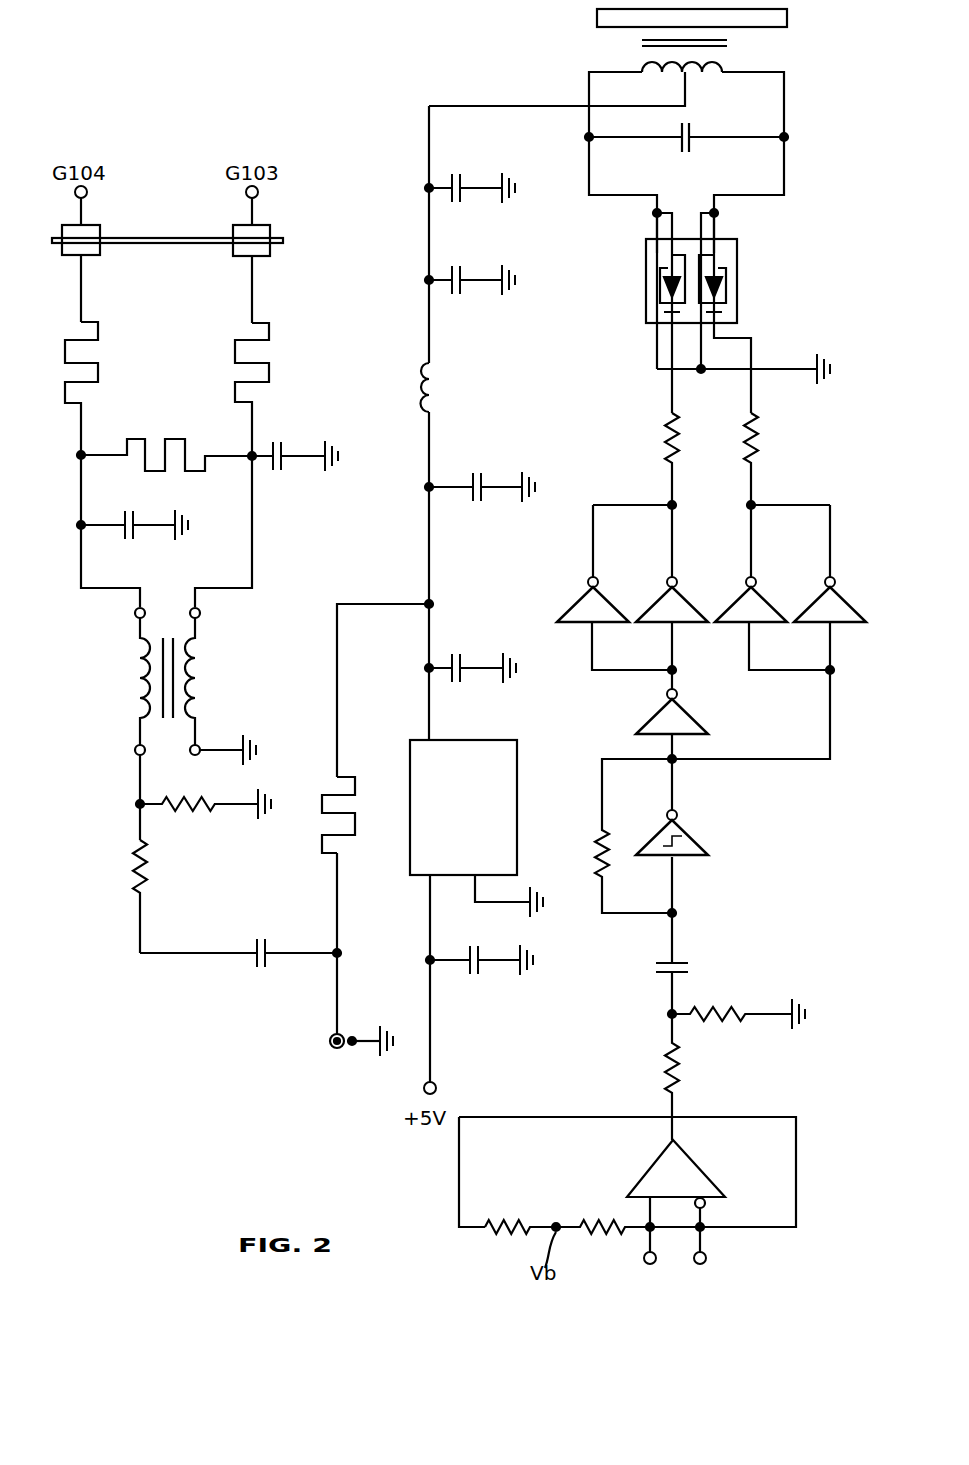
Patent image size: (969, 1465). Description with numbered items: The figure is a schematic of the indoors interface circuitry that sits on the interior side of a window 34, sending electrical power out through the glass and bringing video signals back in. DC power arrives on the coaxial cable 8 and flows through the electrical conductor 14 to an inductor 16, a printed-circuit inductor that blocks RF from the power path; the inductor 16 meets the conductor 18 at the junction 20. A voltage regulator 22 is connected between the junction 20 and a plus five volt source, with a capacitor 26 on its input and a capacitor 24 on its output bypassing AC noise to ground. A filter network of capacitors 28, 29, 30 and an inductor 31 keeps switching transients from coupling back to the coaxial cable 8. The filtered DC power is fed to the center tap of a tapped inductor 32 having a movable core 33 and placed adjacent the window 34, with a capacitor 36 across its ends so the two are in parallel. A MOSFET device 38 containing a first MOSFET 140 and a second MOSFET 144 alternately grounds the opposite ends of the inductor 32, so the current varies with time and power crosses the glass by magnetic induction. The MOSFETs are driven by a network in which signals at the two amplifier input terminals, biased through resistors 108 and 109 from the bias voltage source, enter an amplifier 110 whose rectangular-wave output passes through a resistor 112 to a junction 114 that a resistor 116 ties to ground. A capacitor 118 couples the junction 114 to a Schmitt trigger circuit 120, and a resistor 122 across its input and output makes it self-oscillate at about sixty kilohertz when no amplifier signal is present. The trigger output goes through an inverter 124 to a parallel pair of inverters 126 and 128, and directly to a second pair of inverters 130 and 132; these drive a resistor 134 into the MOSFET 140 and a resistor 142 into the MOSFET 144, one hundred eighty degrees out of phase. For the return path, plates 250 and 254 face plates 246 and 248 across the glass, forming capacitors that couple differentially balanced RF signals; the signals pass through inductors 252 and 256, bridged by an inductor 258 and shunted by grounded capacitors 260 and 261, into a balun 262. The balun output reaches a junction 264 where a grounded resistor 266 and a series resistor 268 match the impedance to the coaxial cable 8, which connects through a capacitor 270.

The coaxial cable 8 is at (330, 1045).
The electrical conductor 14 is at (337, 895).
The inductor 16 is at (322, 830).
The conductor 18 is at (429, 537).
The junction 20 is at (432, 603).
The voltage regulator 22 is at (518, 790).
The capacitor 24 is at (480, 965).
The capacitor 26 is at (462, 675).
The capacitor 28 is at (485, 480).
The capacitor 29 is at (464, 282).
The capacitor 30 is at (464, 192).
The inductor 31 is at (435, 388).
The tapped inductor 32 is at (642, 68).
The movable core 33 is at (720, 48).
The window 34 is at (170, 243).
The capacitor 36 is at (690, 145).
The MOSFET device 38 is at (691, 311).
The resistor 108 is at (610, 1222).
The resistor 109 is at (500, 1235).
The amplifier 110 is at (718, 1177).
The resistor 112 is at (668, 1062).
The junction 114 is at (672, 1012).
The resistor 116 is at (735, 1010).
The capacitor 118 is at (682, 958).
The Schmitt trigger circuit 120 is at (693, 828).
The resistor 122 is at (600, 838).
The inverter 124 is at (700, 713).
The inverter 126 is at (616, 600).
The inverter 128 is at (695, 600).
The inverter 130 is at (772, 600).
The inverter 132 is at (852, 600).
The resistor 134 is at (668, 437).
The first MOSFET 140 is at (657, 297).
The resistor 142 is at (754, 450).
The second MOSFET 144 is at (728, 275).
The plate 246 is at (100, 235).
The plate 248 is at (270, 235).
The plate 250 is at (73, 257).
The inductor 252 is at (100, 373).
The plate 254 is at (245, 257).
The inductor 256 is at (270, 373).
The inductor 258 is at (180, 437).
The grounded capacitor 260 is at (133, 530).
The grounded capacitor 261 is at (285, 455).
The balun 262 is at (148, 662).
The junction 264 is at (142, 804).
The resistor 266 is at (200, 812).
The resistor 268 is at (140, 862).
The capacitor 270 is at (257, 962).